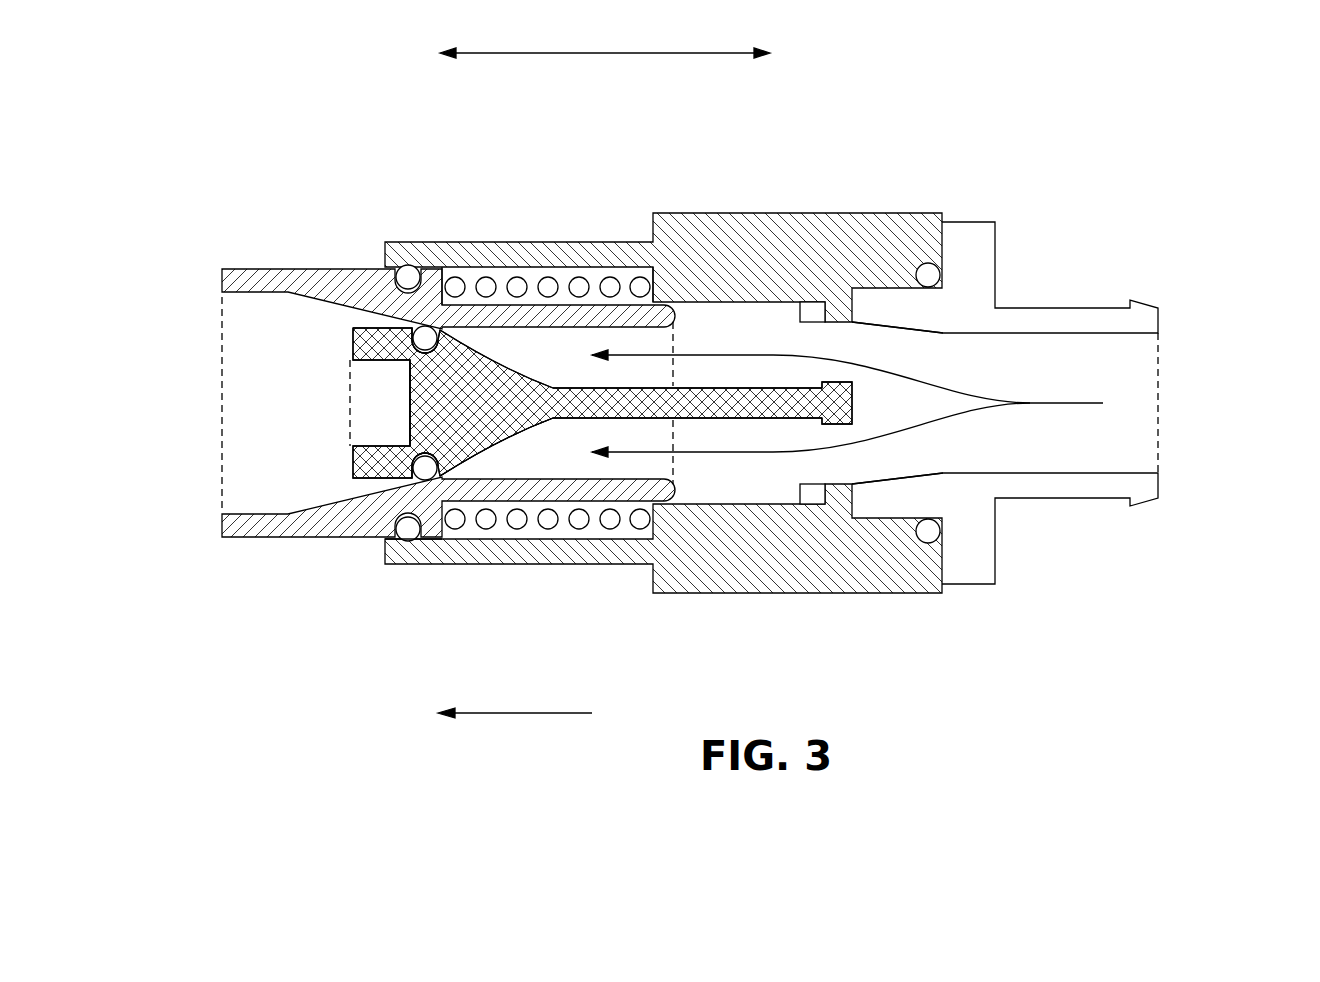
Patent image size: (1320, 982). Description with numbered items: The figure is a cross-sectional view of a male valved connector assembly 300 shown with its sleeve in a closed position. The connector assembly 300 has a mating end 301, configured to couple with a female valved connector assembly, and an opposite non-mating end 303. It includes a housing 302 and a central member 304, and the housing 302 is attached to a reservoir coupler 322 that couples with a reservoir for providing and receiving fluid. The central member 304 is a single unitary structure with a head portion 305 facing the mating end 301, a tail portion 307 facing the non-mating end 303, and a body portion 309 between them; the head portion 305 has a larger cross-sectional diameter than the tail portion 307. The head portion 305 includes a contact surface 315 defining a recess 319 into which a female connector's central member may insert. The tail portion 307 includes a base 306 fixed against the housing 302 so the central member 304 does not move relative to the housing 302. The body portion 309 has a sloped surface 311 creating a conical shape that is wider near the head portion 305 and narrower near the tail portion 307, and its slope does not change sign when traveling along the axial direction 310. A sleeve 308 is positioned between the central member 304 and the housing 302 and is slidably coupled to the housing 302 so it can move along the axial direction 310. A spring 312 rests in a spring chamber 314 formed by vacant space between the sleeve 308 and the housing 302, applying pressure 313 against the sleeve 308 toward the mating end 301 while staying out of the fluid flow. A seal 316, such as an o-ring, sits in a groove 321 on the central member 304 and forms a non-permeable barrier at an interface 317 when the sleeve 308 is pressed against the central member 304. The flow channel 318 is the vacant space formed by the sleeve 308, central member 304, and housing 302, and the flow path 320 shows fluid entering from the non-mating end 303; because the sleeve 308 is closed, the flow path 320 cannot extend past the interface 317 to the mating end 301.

The male valved connector assembly 300 is at (207, 148).
The mating end 301 is at (171, 403).
The housing 302 is at (770, 233).
The non-mating end 303 is at (1226, 403).
The central member 304 is at (747, 403).
The head portion 305 is at (385, 337).
The base 306 is at (853, 415).
The tail portion 307 is at (850, 433).
The sleeve 308 is at (314, 275).
The body portion 309 is at (495, 400).
The axial direction 310 is at (605, 40).
The sloped surface 311 is at (490, 450).
The spring 312 is at (543, 520).
The pressure 313 is at (515, 743).
The spring chamber 314 is at (627, 277).
The contact surface 315 is at (403, 390).
The seal 316 is at (413, 467).
The interface 317 is at (383, 540).
The flow channel 318 is at (720, 322).
The recess 319 is at (380, 410).
The flow path 320 is at (1003, 410).
The groove 321 is at (413, 478).
The reservoir coupler 322 is at (972, 243).